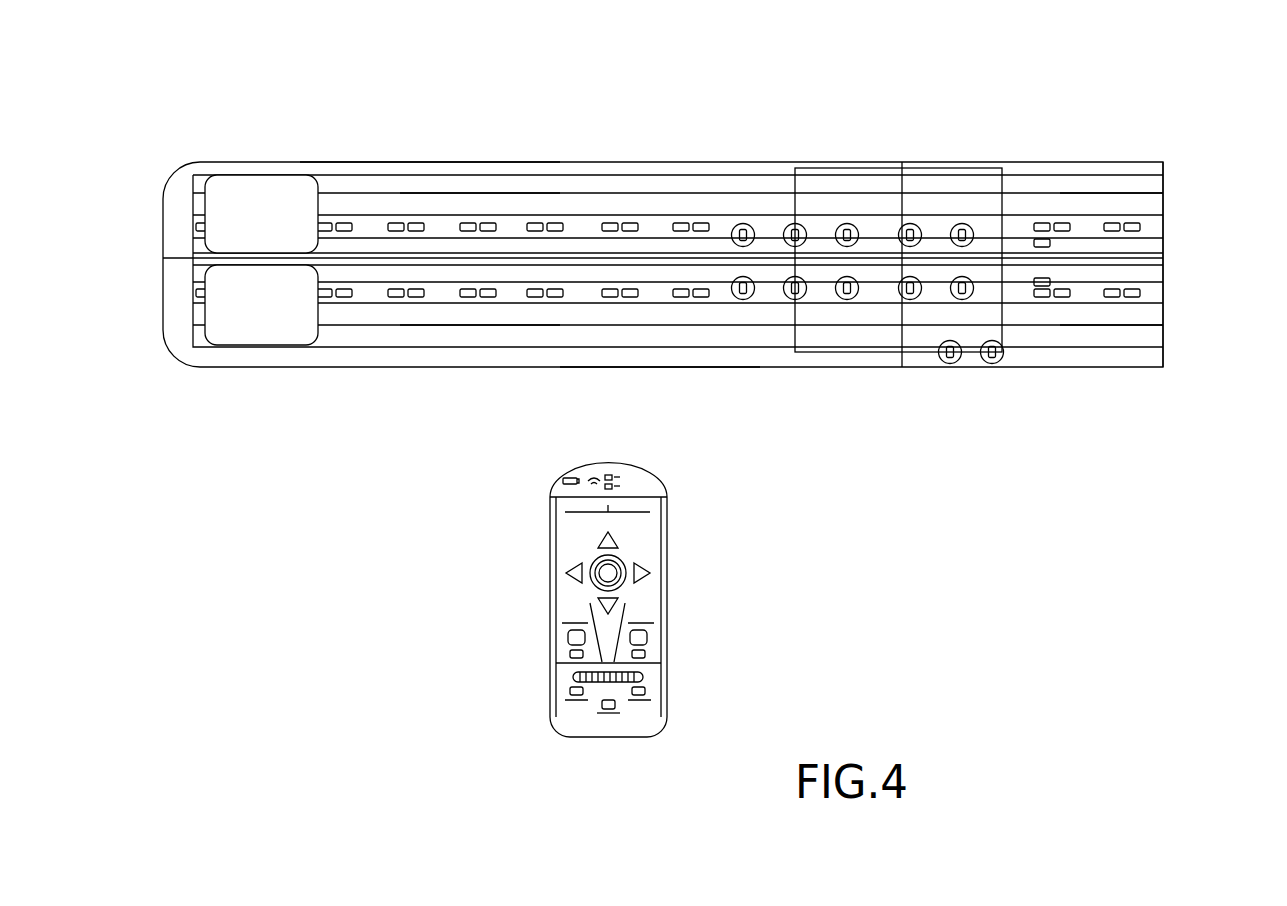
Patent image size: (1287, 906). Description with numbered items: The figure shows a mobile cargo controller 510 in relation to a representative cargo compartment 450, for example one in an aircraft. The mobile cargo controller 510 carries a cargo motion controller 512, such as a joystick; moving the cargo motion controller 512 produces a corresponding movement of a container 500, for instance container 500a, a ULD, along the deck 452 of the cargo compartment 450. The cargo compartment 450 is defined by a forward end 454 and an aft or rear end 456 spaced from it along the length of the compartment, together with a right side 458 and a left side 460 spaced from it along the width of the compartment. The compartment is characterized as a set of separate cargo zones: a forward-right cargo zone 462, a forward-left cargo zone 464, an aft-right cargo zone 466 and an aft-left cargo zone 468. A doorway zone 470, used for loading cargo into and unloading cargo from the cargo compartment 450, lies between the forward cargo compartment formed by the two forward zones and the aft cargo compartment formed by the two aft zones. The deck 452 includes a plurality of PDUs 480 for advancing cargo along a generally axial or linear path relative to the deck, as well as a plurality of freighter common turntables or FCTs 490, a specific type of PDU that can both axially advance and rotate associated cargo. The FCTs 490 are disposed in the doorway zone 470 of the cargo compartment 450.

The cargo compartment 450 is at (995, 106).
The deck 452 is at (674, 194).
The forward end 454 is at (163, 258).
The aft end 456 is at (1165, 258).
The right side 458 is at (408, 162).
The left side 460 is at (690, 367).
The forward-right cargo zone 462 is at (474, 186).
The forward-left cargo zone 464 is at (430, 342).
The aft-right cargo zone 466 is at (1129, 188).
The aft-left cargo zone 468 is at (1117, 342).
The doorway zone 470 is at (903, 156).
The PDUs 480 is at (540, 223).
The freighter common turntables 490 is at (855, 300).
The container 500 is at (261, 214).
The container 500a is at (261, 305).
The mobile cargo controller 510 is at (552, 580).
The cargo motion controller 512 is at (607, 573).